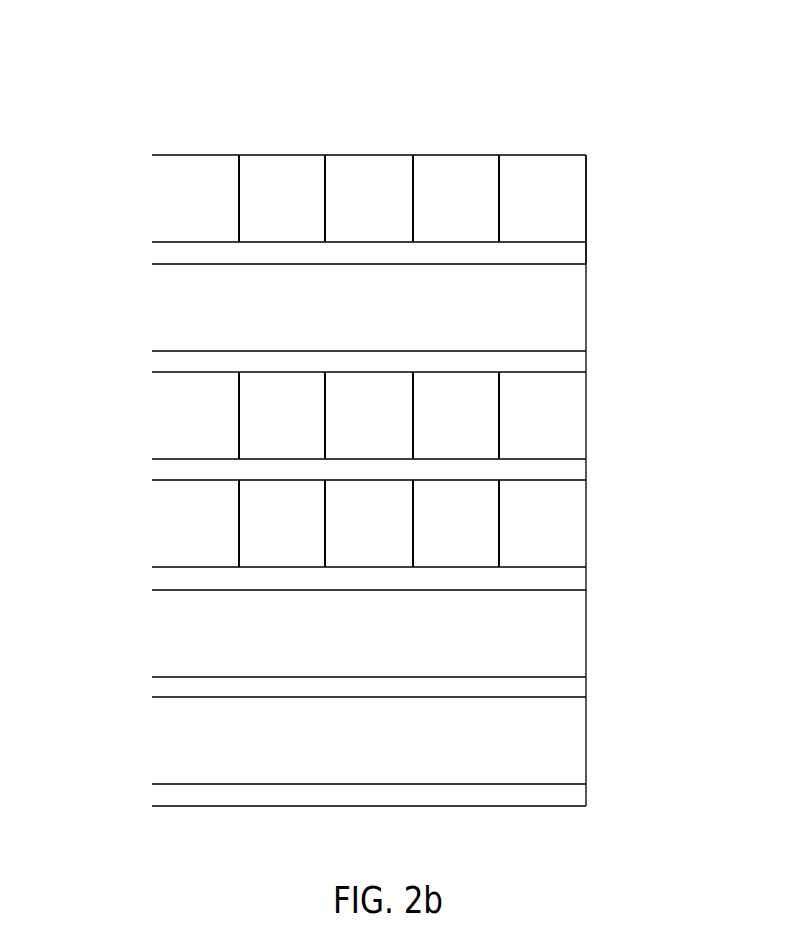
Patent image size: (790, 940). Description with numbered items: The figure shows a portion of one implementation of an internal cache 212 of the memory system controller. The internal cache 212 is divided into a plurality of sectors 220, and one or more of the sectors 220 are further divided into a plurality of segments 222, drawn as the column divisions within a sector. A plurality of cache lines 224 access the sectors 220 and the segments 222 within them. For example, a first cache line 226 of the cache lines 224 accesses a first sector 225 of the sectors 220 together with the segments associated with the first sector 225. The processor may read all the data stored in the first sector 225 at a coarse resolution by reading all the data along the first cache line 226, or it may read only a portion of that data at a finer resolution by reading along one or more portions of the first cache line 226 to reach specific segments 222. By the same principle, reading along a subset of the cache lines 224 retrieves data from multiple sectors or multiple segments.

The internal cache 212 is at (367, 408).
The sectors 220 is at (316, 336).
The segments 222 is at (290, 154).
The cache lines 224 is at (151, 254).
The first sector 225 is at (587, 198).
The first cache line 226 is at (587, 254).